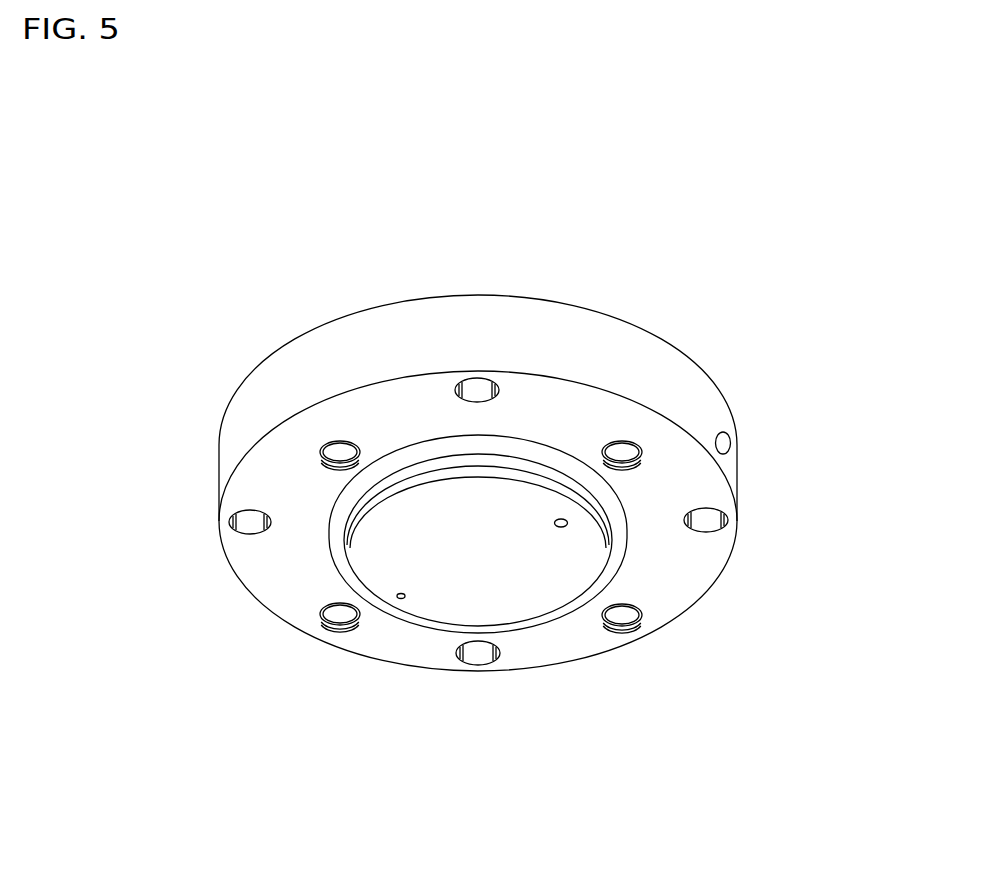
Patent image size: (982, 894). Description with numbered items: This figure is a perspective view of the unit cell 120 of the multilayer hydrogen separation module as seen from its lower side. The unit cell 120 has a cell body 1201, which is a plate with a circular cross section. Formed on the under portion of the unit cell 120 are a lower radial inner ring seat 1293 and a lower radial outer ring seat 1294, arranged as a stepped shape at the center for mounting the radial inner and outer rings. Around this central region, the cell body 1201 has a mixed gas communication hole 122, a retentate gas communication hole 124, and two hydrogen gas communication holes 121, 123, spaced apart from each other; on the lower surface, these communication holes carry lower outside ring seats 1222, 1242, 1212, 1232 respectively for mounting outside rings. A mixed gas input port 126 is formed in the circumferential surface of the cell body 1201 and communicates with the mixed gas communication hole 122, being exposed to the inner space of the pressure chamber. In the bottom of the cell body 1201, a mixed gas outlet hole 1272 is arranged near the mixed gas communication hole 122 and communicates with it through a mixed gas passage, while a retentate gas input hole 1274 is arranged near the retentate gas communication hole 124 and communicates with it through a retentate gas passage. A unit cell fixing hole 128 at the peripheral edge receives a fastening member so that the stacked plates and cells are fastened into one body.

The unit cell 120 is at (379, 378).
The cell body 1201 is at (461, 313).
The lower radial inner ring seat 1293 is at (433, 475).
The lower radial outer ring seat 1294 is at (541, 453).
The lower outside ring seat 1222 is at (615, 447).
The mixed gas communication hole 122 is at (625, 451).
The hydrogen gas communication hole 123 is at (338, 448).
The lower outside ring seat 1232 is at (333, 447).
The retentate gas communication hole 124 is at (337, 614).
The lower outside ring seat 1242 is at (337, 626).
The hydrogen gas communication hole 121 is at (625, 615).
The lower outside ring seat 1212 is at (627, 622).
The mixed gas input port 126 is at (727, 442).
The unit cell fixing hole 128 is at (249, 527).
The mixed gas outlet hole 1272 is at (568, 522).
The retentate gas input hole 1274 is at (400, 599).